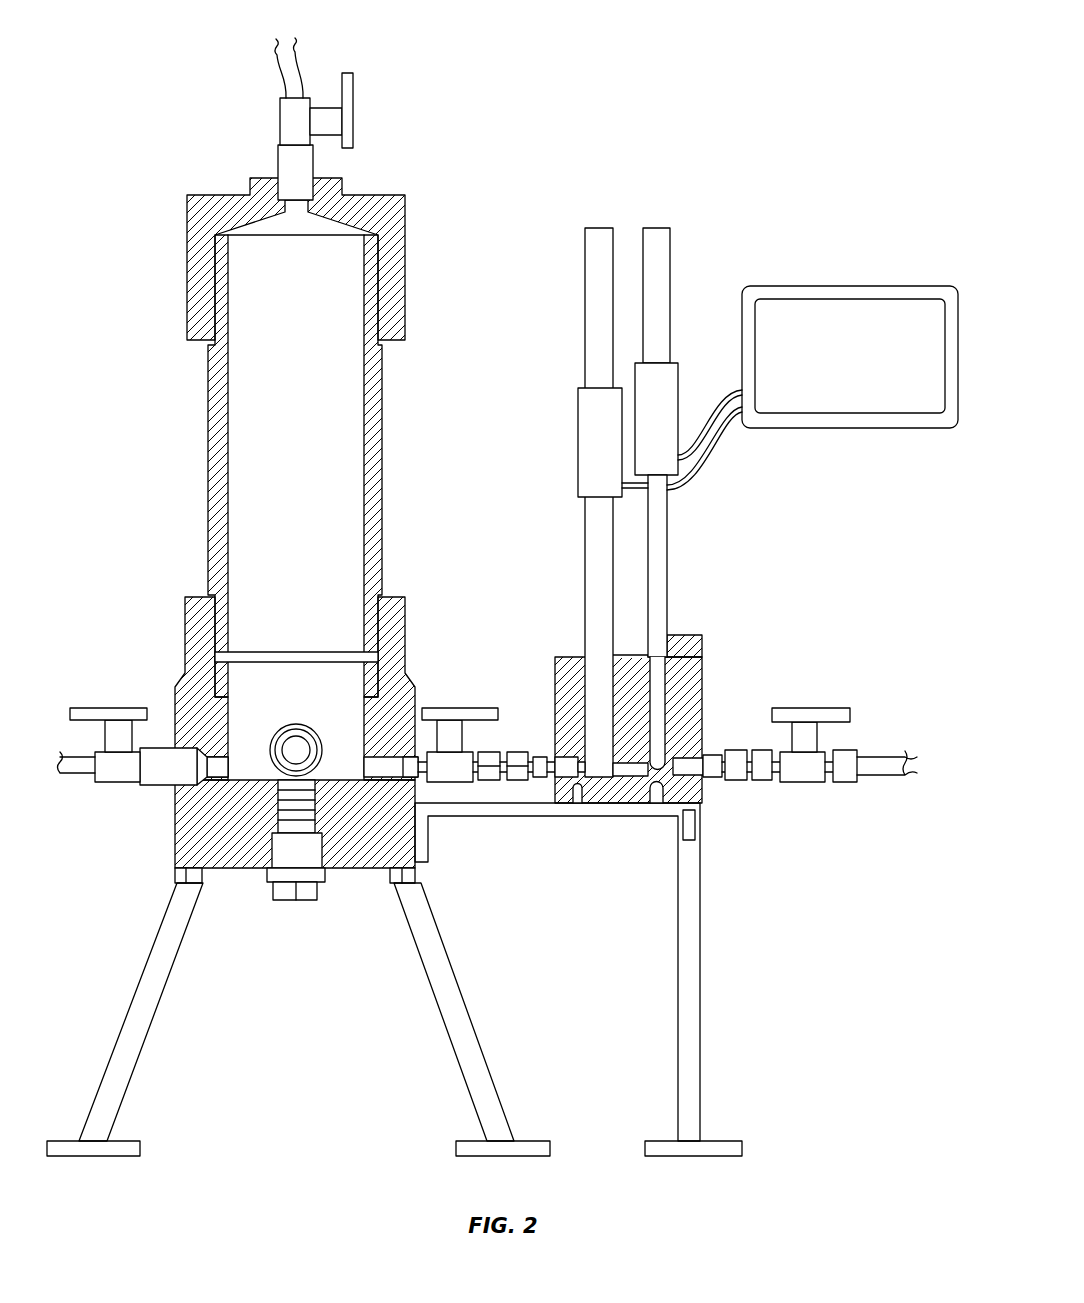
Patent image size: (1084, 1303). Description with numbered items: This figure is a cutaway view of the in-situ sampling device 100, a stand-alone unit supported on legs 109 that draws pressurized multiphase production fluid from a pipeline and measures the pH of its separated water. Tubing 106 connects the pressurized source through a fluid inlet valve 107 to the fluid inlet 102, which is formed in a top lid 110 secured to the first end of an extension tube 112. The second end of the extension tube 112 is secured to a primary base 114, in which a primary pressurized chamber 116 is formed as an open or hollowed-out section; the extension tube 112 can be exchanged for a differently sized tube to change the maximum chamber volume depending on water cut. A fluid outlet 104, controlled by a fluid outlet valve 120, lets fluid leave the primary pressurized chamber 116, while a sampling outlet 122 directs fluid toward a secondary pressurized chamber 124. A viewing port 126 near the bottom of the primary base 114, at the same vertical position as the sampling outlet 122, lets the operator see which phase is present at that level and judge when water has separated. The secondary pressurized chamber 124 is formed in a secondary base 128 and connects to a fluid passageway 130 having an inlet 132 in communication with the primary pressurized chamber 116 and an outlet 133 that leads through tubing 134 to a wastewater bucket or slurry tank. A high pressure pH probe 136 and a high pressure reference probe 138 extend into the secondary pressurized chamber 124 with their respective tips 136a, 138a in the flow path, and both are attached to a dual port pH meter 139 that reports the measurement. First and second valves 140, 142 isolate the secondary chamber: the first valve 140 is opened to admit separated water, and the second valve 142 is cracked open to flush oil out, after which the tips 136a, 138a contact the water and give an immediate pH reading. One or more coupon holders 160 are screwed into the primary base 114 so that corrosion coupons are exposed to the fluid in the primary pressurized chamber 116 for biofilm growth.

The in-situ sampling device 100 is at (93, 636).
The fluid inlet 102 is at (292, 180).
The fluid outlet 104 is at (187, 770).
The tubing 106 is at (300, 53).
The fluid inlet valve 107 is at (280, 122).
The legs 109 is at (131, 1070).
The top lid 110 is at (192, 212).
The extension tube 112 is at (208, 460).
The primary base 114 is at (190, 850).
The primary pressurized chamber 116 is at (242, 767).
The fluid outlet valve 120 is at (112, 781).
The sampling outlet 122 is at (378, 767).
The secondary pressurized chamber 124 is at (633, 765).
The viewing port 126 is at (270, 750).
The secondary base 128 is at (698, 645).
The fluid passageway 130 is at (572, 767).
The inlet 132 is at (553, 777).
The outlet 133 is at (703, 760).
The tubing 134 is at (887, 770).
The high pressure pH probe 136 is at (592, 242).
The tip of pH probe 136a is at (600, 773).
The high pressure reference probe 138 is at (665, 253).
The tip of reference probe 138a is at (662, 773).
The dual port pH meter 139 is at (887, 306).
The first valve 140 is at (462, 708).
The second valve 142 is at (825, 708).
The coupon holder 160 is at (310, 853).